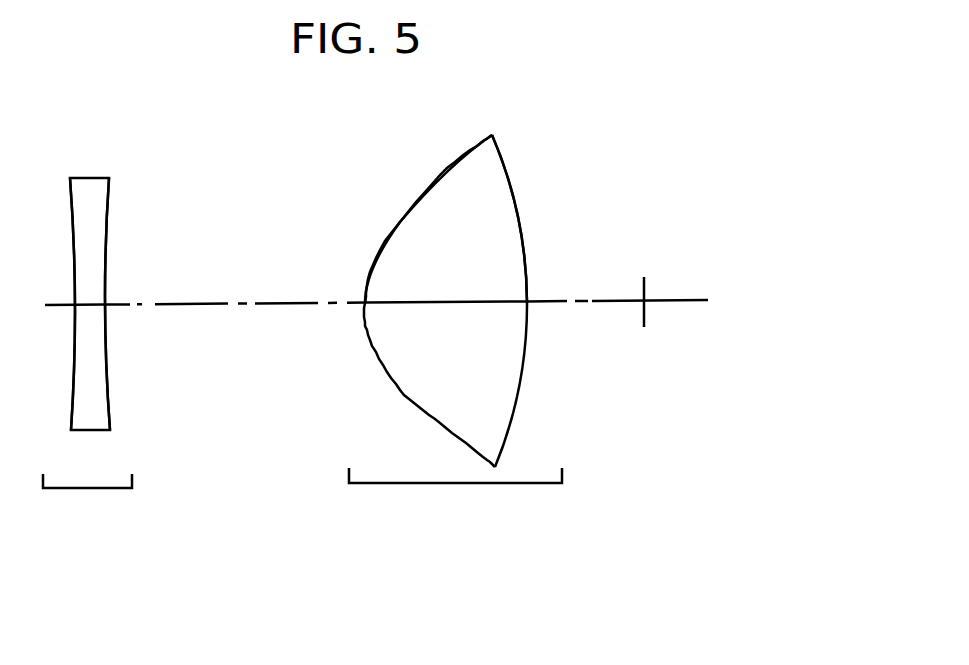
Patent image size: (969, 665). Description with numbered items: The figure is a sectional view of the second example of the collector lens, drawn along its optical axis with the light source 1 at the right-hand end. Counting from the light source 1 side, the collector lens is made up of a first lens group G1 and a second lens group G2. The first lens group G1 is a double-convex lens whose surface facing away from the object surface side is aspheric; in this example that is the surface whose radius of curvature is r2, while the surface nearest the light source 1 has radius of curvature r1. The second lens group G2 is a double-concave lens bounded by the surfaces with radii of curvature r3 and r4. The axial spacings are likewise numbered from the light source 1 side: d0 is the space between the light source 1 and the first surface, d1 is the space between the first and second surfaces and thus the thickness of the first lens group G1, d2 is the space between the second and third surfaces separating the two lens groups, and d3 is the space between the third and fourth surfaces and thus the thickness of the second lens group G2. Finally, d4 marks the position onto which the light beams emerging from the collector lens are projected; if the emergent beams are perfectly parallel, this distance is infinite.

The light source 1 is at (644, 285).
The first lens group G1 is at (455, 335).
The second lens group G2 is at (87, 356).
The radius of curvature of the first lens surface r1 is at (514, 189).
The radius of curvature of the second lens surface r2 is at (440, 175).
The radius of curvature of the third lens surface r3 is at (110, 208).
The radius of curvature of the fourth lens surface r4 is at (68, 208).
The space between the light source and the first surface d0 is at (579, 300).
The space between the first and second lens surfaces d1 is at (445, 303).
The space between the second and third lens surfaces d2 is at (260, 303).
The space between the third and fourth lens surfaces d3 is at (93, 305).
The projection position of emergent light beams d4 is at (52, 305).